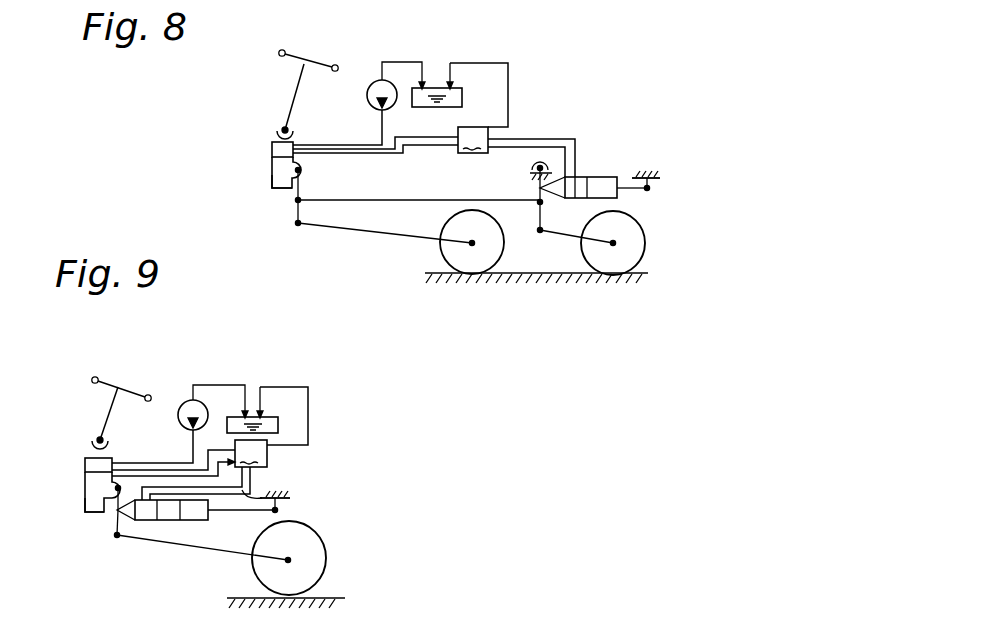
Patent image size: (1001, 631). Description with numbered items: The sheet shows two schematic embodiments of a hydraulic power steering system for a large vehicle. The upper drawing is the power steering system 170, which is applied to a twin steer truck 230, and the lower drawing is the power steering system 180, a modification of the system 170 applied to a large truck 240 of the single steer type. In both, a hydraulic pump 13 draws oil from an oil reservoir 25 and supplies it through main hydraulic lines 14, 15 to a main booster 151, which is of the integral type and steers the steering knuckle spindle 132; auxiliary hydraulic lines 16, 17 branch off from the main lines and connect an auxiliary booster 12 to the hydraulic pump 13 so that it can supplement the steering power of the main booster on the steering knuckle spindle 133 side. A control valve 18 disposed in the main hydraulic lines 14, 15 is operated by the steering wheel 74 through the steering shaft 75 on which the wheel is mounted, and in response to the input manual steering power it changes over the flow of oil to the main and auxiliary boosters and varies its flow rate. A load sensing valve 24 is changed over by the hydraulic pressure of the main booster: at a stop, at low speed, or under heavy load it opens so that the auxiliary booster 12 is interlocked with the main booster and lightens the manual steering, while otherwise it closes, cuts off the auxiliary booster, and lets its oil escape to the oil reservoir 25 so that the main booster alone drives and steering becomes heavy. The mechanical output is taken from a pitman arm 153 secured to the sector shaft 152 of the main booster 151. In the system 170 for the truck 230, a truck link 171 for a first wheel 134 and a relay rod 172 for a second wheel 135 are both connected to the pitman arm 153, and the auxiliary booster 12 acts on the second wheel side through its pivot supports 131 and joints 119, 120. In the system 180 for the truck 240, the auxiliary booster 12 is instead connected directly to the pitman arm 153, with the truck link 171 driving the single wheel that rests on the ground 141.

In FIG. 8, the power steering system 170 is at (463, 25).
In FIG. 9, the power steering system 180 is at (257, 338).
In FIG. 8, the steering wheel 74 is at (301, 60).
In FIG. 9, the steering wheel 74 is at (117, 392).
In FIG. 8, the steering shaft 75 is at (294, 96).
In FIG. 9, the steering shaft 75 is at (106, 416).
In FIG. 8, the hydraulic pump 13 is at (372, 82).
In FIG. 9, the hydraulic pump 13 is at (181, 404).
In FIG. 8, the main hydraulic line 14 is at (374, 128).
In FIG. 9, the main hydraulic line 14 is at (188, 448).
In FIG. 8, the oil reservoir 25 is at (462, 99).
In FIG. 9, the oil reservoir 25 is at (276, 424).
In FIG. 8, the main hydraulic line 15 is at (508, 87).
In FIG. 9, the main hydraulic line 15 is at (310, 406).
In FIG. 8, the auxiliary hydraulic line 16 is at (536, 135).
In FIG. 9, the auxiliary hydraulic line 16 is at (268, 478).
In FIG. 8, the auxiliary hydraulic line 17 is at (557, 146).
In FIG. 9, the auxiliary hydraulic line 17 is at (272, 490).
In FIG. 8, the control valve 18 is at (268, 148).
In FIG. 9, the control valve 18 is at (86, 456).
In FIG. 8, the load sensing valve 24 is at (473, 140).
In FIG. 9, the load sensing valve 24 is at (251, 453).
In FIG. 8, the fixed pivot support 131 is at (530, 166).
In FIG. 9, the fixed pivot support 131 is at (290, 498).
In FIG. 8, the twin steer truck 230 is at (645, 166).
In FIG. 9, the large truck 240 is at (302, 488).
In FIG. 8, the auxiliary booster 12 is at (597, 176).
In FIG. 9, the auxiliary booster 12 is at (182, 523).
In FIG. 8, the main booster 151 is at (276, 182).
In FIG. 9, the main booster 151 is at (92, 513).
In FIG. 8, the sector shaft 152 is at (304, 174).
In FIG. 9, the sector shaft 152 is at (112, 490).
In FIG. 8, the pitman arm 153 is at (292, 226).
In FIG. 9, the pitman arm 153 is at (113, 540).
In FIG. 8, the truck link 171 is at (370, 232).
In FIG. 9, the truck link 171 is at (142, 540).
In FIG. 8, the relay rod 172 is at (408, 202).
In FIG. 8, the pivot joint 119 is at (538, 214).
In FIG. 8, the link 120 is at (558, 234).
In FIG. 8, the steering knuckle spindle 132 is at (478, 236).
In FIG. 9, the steering knuckle spindle 132 is at (292, 552).
In FIG. 8, the steering knuckle spindle 133 is at (613, 243).
In FIG. 8, the first wheel 134 is at (502, 253).
In FIG. 8, the second wheel 135 is at (640, 253).
In FIG. 9, the ground surface 141 is at (324, 546).